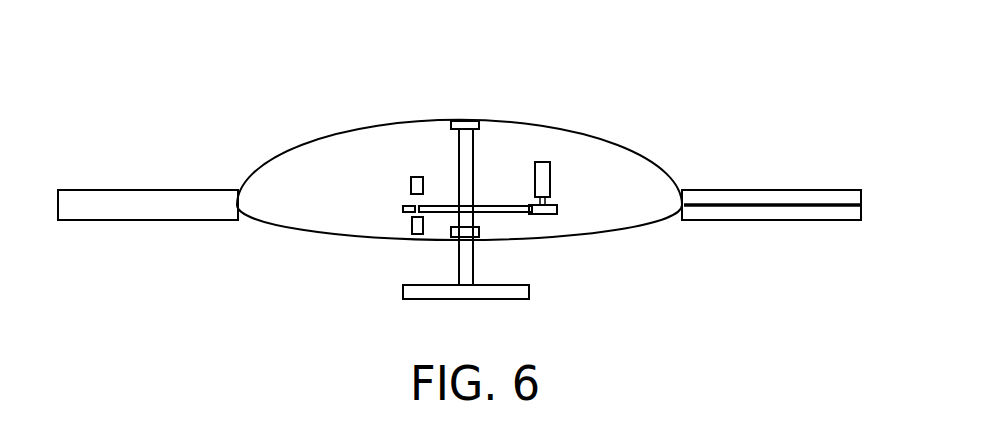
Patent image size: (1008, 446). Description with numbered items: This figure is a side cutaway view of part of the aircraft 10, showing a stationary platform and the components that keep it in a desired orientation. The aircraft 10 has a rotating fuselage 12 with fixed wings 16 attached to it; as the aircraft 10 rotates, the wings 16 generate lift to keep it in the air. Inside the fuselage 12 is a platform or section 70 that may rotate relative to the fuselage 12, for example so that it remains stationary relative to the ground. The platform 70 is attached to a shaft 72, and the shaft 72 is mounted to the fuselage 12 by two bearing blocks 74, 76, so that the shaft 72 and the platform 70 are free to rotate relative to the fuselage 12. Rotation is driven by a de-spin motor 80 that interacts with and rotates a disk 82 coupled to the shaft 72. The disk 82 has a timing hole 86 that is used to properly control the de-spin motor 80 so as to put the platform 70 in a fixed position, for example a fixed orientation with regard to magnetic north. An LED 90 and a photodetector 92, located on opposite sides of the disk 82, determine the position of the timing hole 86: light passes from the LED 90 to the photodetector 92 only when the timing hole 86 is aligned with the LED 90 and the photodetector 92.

The aircraft 10 is at (226, 126).
The rotating fuselage 12 is at (638, 150).
The fixed wings 16 is at (133, 190).
The platform 70 is at (529, 290).
The shaft 72 is at (474, 155).
The bearing block 74 is at (453, 121).
The bearing block 76 is at (480, 237).
The de-spin motor 80 is at (551, 178).
The disk 82 is at (515, 213).
The timing hole 86 is at (417, 206).
The LED 90 is at (417, 177).
The photodetector 92 is at (416, 236).